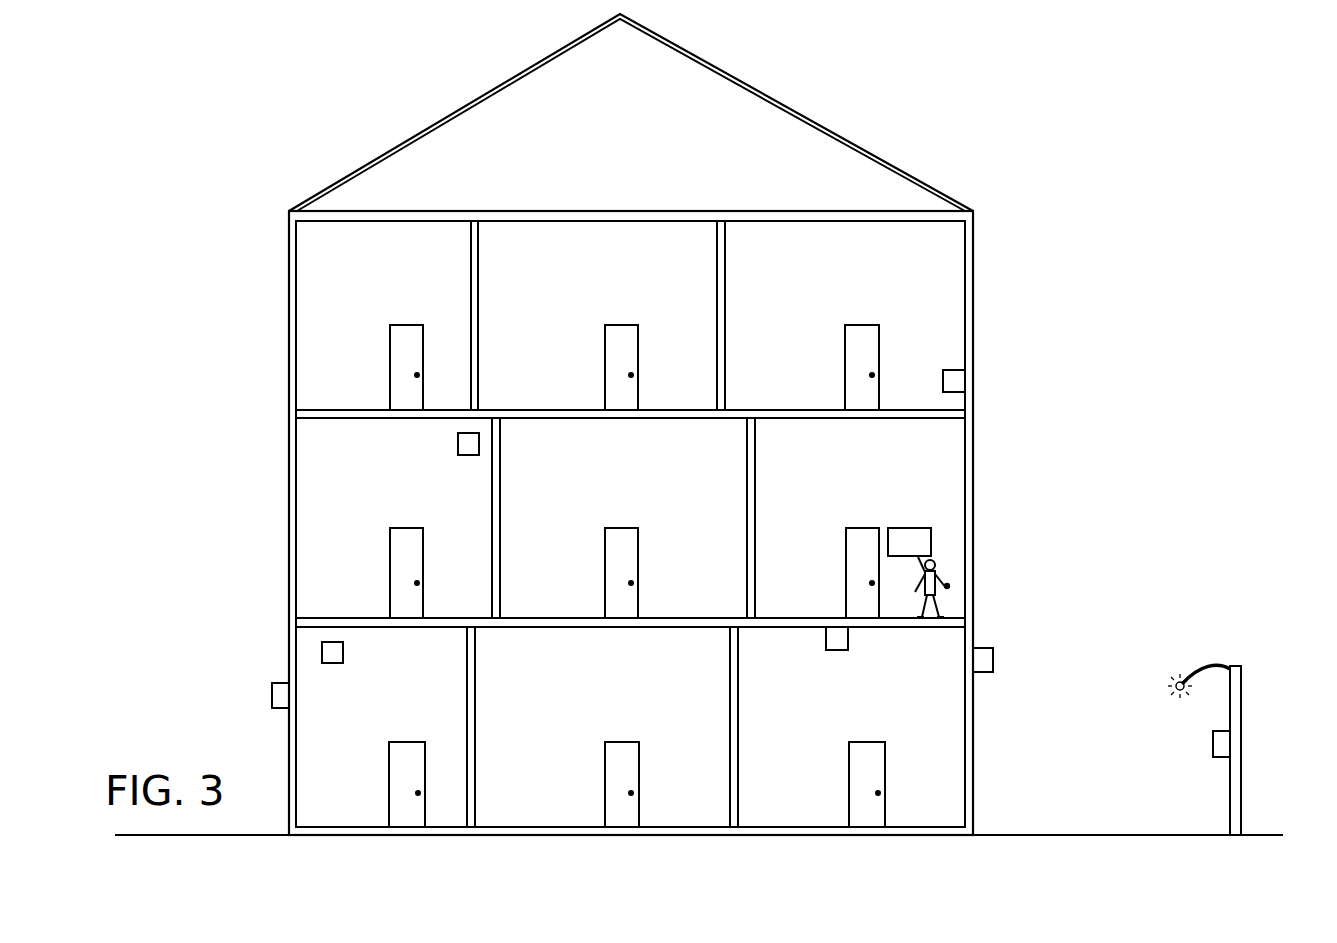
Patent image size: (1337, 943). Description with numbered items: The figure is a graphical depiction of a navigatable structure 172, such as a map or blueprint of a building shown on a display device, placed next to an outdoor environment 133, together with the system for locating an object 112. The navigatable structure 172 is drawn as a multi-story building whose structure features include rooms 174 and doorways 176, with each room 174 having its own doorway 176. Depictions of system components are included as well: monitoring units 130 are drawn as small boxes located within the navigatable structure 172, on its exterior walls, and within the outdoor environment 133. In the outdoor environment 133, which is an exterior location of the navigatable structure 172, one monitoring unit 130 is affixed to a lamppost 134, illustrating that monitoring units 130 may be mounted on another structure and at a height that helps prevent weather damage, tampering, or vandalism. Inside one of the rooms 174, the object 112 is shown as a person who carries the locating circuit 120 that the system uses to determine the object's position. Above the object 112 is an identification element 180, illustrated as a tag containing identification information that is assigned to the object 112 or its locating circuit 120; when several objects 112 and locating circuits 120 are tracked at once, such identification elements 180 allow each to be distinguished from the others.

The object 112 is at (943, 576).
The locating circuit 120 is at (949, 585).
The monitoring unit 130 is at (953, 383).
The outdoor environment 133 is at (152, 626).
The lamppost 134 is at (1243, 706).
The graphical depiction of a navigatable structure 172 is at (905, 104).
The room 174 is at (940, 290).
The doorway 176 is at (405, 350).
The identification element 180 is at (918, 538).